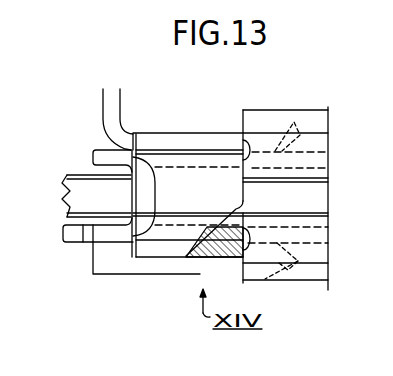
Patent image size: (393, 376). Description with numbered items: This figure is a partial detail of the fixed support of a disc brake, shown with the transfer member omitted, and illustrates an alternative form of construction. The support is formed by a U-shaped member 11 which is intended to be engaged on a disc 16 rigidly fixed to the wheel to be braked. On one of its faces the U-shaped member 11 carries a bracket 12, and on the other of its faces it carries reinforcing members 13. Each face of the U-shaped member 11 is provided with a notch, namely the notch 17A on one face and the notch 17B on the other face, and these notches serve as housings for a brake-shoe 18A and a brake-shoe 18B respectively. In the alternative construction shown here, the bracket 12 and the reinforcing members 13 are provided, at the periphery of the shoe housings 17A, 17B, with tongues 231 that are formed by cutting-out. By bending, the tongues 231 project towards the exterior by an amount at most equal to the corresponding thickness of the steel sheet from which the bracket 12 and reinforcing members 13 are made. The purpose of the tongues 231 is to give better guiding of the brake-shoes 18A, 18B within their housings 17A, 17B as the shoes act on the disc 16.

The U-shaped member 11 is at (64, 247).
The bracket 12 is at (124, 104).
The reinforcing member 13 is at (135, 274).
The disc 16 is at (76, 172).
The notch 17A is at (243, 134).
The notch 17B is at (242, 204).
The brake-shoe 18A is at (312, 156).
The brake-shoe 18B is at (318, 250).
The tongue 231 is at (243, 132).